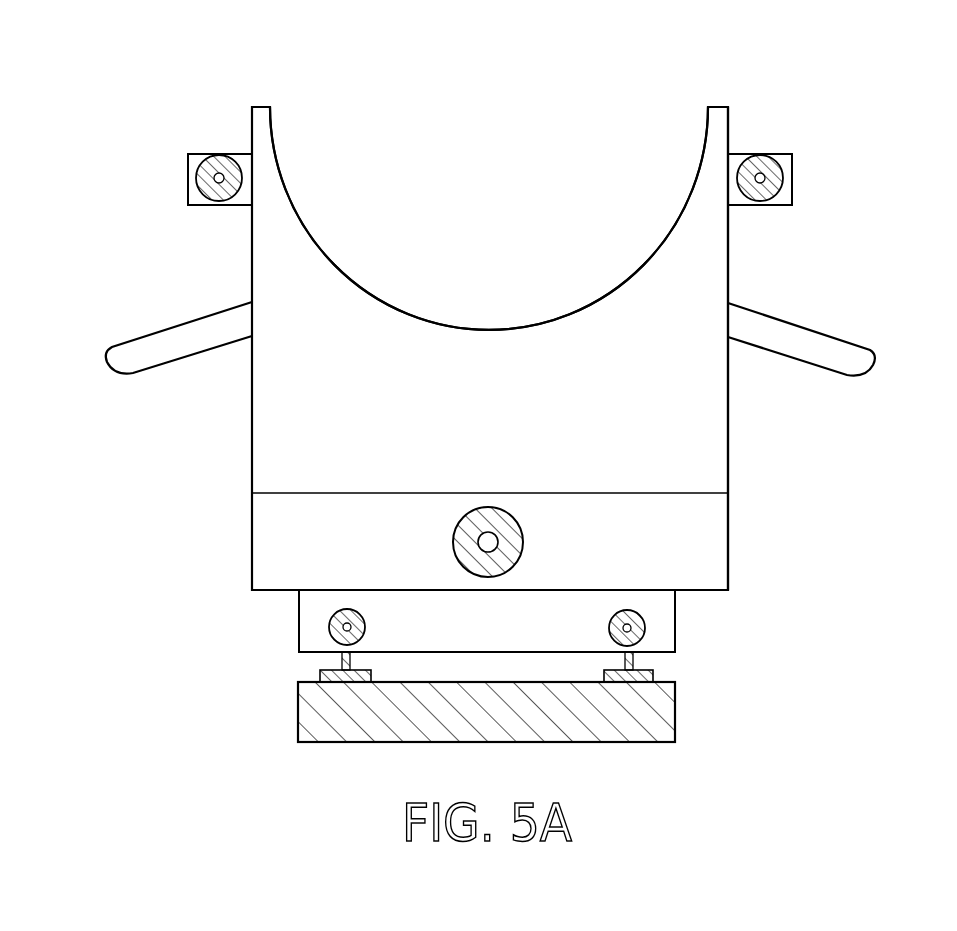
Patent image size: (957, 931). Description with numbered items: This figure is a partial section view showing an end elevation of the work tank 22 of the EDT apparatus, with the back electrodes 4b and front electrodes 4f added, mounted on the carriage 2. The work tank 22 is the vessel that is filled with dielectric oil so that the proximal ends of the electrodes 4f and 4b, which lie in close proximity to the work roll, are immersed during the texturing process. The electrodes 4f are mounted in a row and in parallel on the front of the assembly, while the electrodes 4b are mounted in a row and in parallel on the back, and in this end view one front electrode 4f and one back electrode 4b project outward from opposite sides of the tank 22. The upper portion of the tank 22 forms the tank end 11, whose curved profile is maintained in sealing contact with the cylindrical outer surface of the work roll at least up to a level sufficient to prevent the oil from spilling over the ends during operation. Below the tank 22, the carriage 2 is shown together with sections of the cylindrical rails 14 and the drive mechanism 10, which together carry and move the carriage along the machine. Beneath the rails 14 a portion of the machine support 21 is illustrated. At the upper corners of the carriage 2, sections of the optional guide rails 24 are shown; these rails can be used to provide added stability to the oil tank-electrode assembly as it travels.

The carriage 2 is at (262, 555).
The back electrodes 4b is at (157, 340).
The front electrodes 4f is at (832, 333).
The drive mechanism 10 is at (528, 542).
The tank end 11 is at (380, 316).
The cylindrical rails 14 is at (330, 628).
The machine support 21 is at (370, 722).
The work tank 22 is at (728, 262).
The guide rails 24 is at (219, 158).